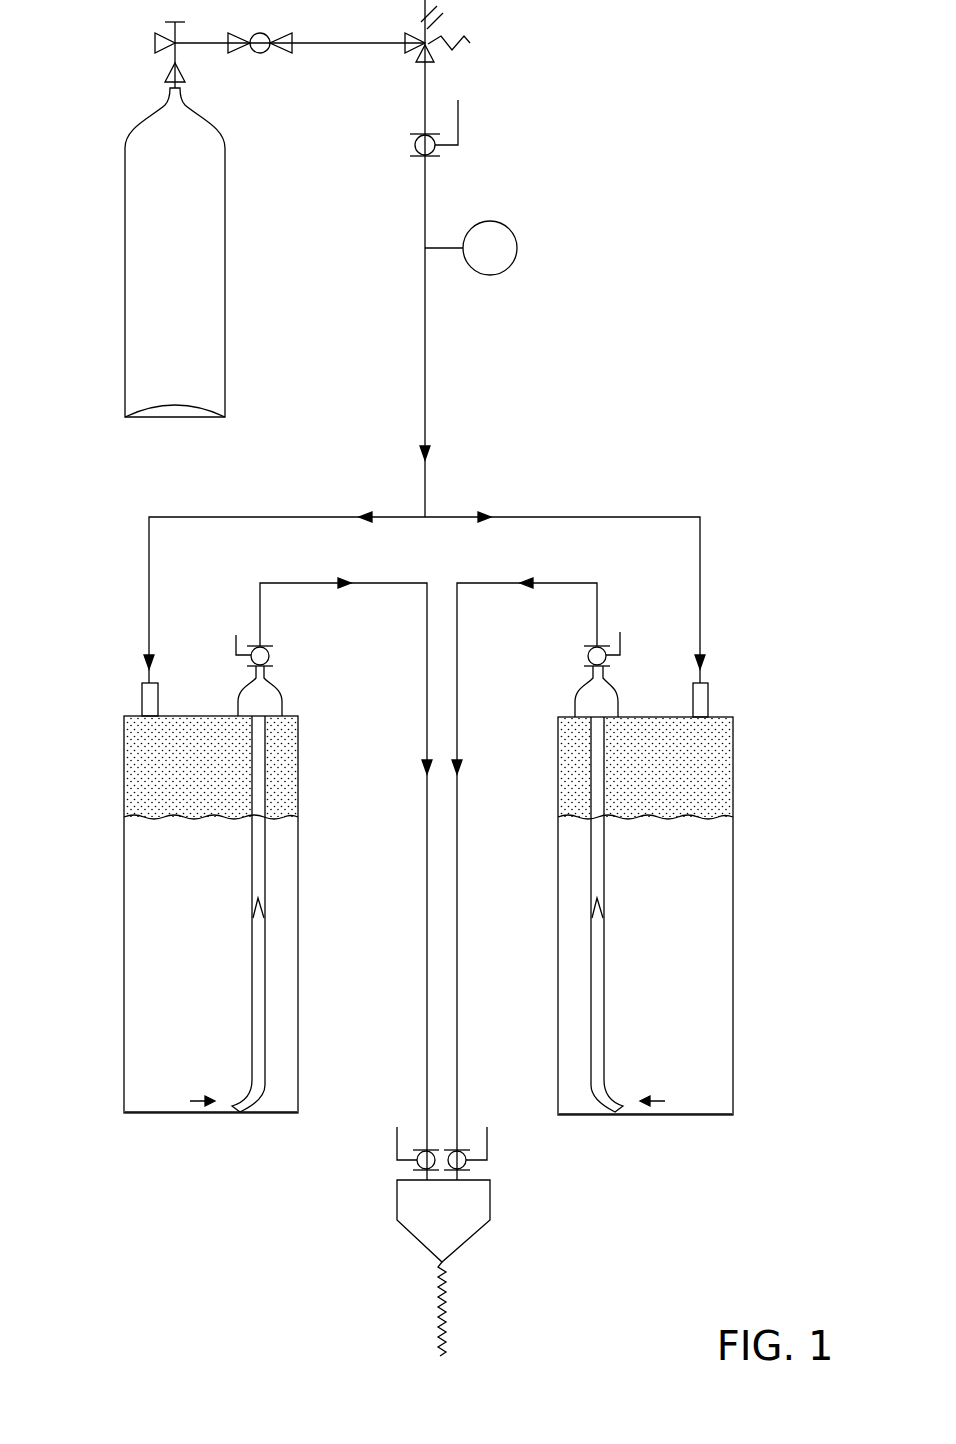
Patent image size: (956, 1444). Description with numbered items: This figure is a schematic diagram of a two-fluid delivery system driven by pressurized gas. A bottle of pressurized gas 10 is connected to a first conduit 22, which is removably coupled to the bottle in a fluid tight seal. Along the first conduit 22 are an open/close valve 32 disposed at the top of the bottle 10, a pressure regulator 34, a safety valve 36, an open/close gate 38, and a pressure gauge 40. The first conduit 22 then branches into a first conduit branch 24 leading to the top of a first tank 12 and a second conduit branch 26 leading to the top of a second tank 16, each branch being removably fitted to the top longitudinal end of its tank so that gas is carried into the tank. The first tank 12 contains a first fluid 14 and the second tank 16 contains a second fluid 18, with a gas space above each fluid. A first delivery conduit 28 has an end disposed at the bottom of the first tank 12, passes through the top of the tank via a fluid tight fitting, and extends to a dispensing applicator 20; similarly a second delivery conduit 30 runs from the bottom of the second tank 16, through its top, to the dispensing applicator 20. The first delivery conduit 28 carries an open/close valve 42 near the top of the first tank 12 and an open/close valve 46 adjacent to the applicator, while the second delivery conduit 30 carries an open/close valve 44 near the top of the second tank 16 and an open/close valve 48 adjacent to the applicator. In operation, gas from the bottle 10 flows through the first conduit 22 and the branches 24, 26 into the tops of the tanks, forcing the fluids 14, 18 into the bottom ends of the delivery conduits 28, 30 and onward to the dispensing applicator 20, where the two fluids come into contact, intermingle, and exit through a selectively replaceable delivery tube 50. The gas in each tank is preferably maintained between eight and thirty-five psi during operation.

The bottle of pressurized gas 10 is at (225, 325).
The first tank 12 is at (298, 835).
The first fluid 14 is at (165, 1012).
The second tank 16 is at (733, 793).
The second fluid 18 is at (685, 932).
The dispensing applicator 20 is at (470, 1240).
The first conduit 22 is at (364, 47).
The first conduit branch 24 is at (238, 517).
The second conduit branch 26 is at (648, 517).
The first delivery conduit 28 is at (427, 705).
The second delivery conduit 30 is at (457, 668).
The open/close valve 32 is at (167, 63).
The pressure regulator 34 is at (264, 53).
The safety valve 36 is at (436, 60).
The open/close gate 38 is at (434, 156).
The pressure gauge 40 is at (517, 248).
The open/close valve 42 is at (246, 646).
The open/close valve 44 is at (601, 646).
The open/close valve 46 is at (395, 1150).
The open/close valve 48 is at (468, 1163).
The delivery tube 50 is at (446, 1310).